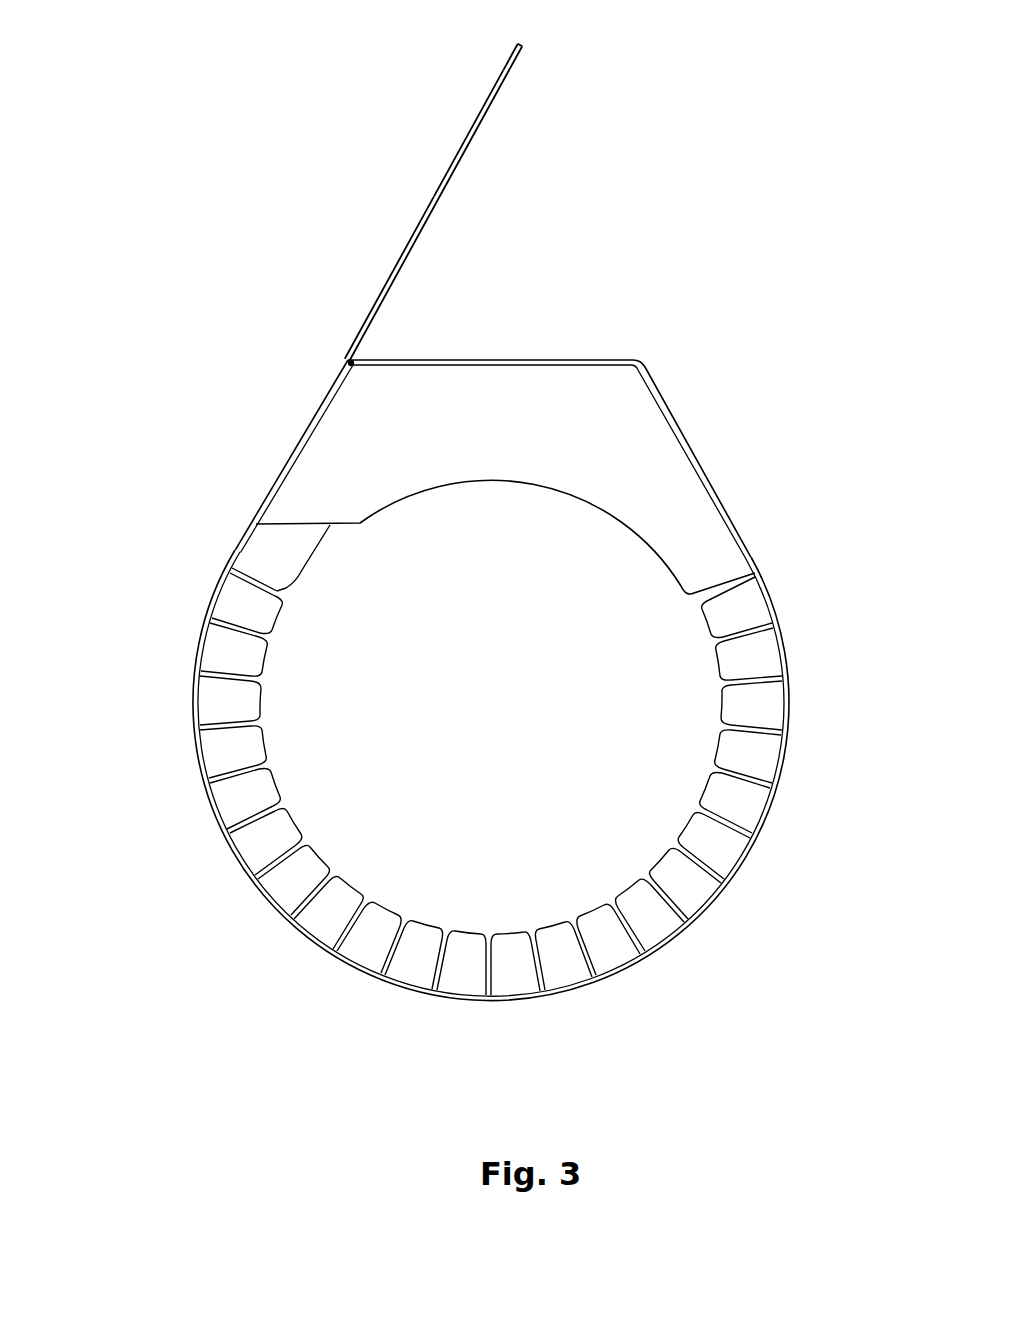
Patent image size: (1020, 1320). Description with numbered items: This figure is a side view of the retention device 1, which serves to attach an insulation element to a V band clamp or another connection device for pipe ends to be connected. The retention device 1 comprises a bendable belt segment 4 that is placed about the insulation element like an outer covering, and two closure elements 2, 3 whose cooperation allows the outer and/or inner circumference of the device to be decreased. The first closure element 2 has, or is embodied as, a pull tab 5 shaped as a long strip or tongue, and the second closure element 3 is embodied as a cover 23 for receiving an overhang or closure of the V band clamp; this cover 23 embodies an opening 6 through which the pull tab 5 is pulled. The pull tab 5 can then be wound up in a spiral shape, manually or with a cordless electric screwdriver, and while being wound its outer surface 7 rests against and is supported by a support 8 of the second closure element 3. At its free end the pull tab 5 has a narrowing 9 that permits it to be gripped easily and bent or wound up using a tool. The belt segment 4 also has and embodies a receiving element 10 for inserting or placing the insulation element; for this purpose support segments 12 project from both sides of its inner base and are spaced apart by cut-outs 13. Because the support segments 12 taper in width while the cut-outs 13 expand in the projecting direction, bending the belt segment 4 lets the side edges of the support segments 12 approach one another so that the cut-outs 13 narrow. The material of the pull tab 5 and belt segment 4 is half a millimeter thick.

The retention device 1 is at (680, 240).
The first closure element 2 is at (280, 455).
The second closure element 3 is at (570, 385).
The belt segment 4 is at (718, 905).
The pull tab 5 is at (400, 262).
The opening 6 is at (345, 358).
The outer surface 7 is at (468, 130).
The support 8 is at (398, 360).
The narrowing 9 is at (502, 80).
The receiving element 10 is at (712, 757).
The support segments 12 is at (232, 745).
The cut-outs 13 is at (237, 770).
The cover 23 is at (688, 442).